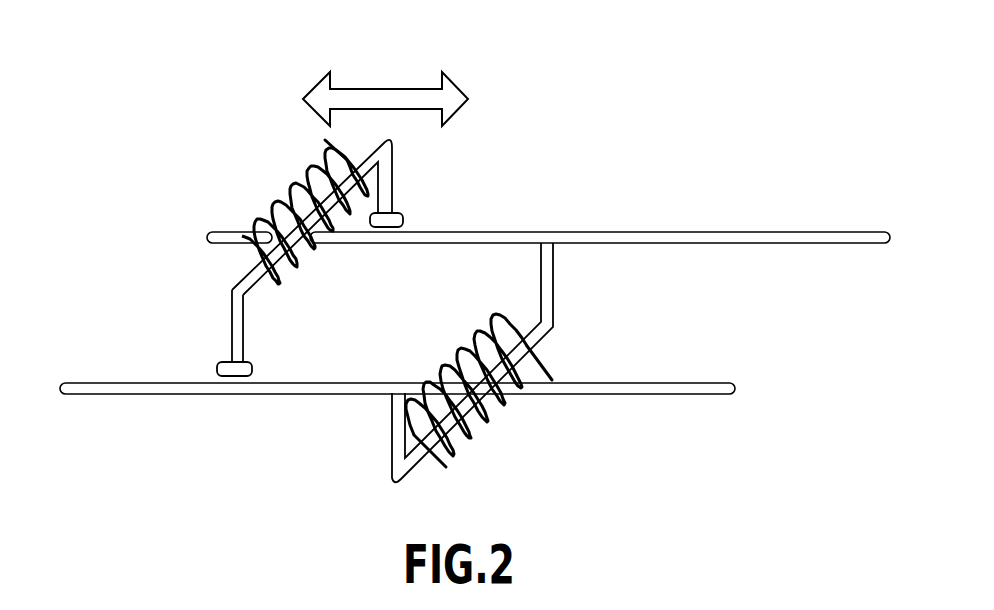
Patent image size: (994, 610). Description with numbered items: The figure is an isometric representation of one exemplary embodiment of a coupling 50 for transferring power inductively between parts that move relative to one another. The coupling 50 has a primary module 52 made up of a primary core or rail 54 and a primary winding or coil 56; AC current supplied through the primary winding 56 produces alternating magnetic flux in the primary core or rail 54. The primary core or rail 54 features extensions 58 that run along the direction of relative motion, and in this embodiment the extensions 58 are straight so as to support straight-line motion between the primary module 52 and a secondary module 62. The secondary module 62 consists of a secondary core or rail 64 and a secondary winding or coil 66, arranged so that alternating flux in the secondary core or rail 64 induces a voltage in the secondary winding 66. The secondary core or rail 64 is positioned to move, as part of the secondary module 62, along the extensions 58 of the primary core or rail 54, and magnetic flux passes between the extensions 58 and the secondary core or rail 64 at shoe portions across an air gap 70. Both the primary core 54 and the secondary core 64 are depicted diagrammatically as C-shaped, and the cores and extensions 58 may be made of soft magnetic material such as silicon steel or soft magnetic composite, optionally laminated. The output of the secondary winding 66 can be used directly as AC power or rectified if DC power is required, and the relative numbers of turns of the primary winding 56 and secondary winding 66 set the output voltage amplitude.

The coupling 50 is at (641, 64).
The primary module 52 is at (655, 396).
The primary core or rail 54 is at (542, 284).
The primary winding or coil 56 is at (482, 334).
The extensions 58 is at (768, 232).
The secondary module 62 is at (393, 170).
The secondary core or rail 64 is at (244, 342).
The secondary winding or coil 66 is at (302, 186).
The air gap 70 is at (393, 230).